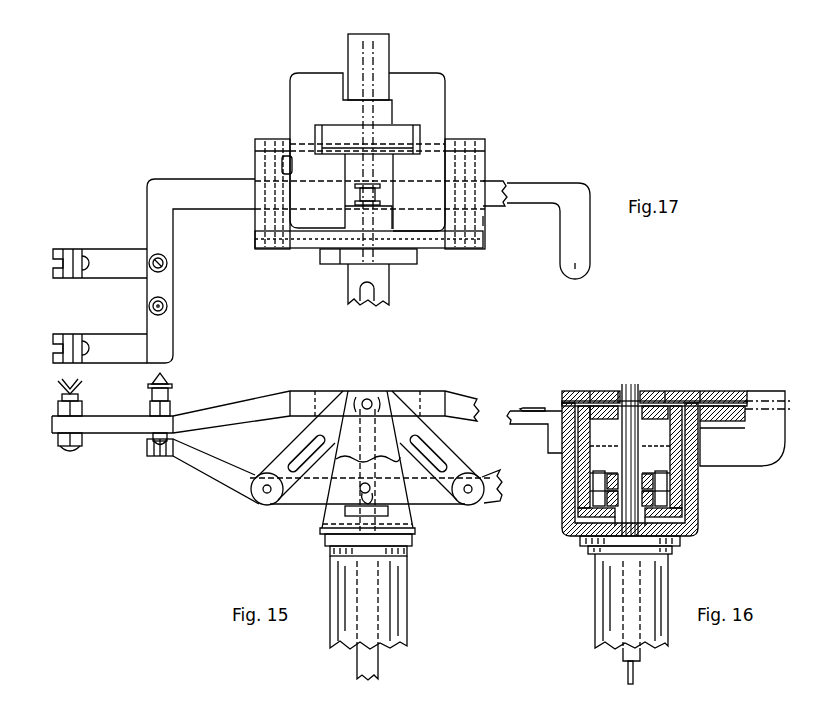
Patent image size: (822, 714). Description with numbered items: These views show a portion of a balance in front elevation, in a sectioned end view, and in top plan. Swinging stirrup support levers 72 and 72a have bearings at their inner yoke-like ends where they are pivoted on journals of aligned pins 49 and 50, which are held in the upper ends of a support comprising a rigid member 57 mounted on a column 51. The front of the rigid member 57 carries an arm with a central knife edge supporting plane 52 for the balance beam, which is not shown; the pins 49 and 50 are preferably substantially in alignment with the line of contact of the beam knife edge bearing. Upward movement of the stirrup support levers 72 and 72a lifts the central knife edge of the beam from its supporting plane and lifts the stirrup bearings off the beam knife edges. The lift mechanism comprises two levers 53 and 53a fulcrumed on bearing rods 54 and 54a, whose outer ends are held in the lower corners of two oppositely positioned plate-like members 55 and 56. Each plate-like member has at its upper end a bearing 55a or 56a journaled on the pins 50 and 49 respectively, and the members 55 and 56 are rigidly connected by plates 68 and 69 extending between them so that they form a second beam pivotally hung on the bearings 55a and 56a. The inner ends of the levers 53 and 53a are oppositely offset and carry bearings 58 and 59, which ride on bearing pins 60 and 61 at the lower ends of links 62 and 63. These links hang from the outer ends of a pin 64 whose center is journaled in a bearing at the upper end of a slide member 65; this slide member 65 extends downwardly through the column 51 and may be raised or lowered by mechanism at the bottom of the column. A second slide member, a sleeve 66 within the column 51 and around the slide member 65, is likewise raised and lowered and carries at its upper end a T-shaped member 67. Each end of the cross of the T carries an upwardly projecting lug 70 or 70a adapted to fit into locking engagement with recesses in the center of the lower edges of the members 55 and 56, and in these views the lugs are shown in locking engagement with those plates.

In FIG. 17, the pin 49 is at (372, 52).
In FIG. 16, the pin 49 is at (766, 399).
In FIG. 17, the pin 50 is at (363, 255).
In FIG. 15, the pin 50 is at (366, 397).
In FIG. 16, the pin 50 is at (565, 401).
In FIG. 15, the column 51 is at (407, 599).
In FIG. 16, the column 51 is at (631, 601).
In FIG. 17, the supporting plane 52 is at (361, 292).
In FIG. 16, the supporting plane 52 is at (548, 405).
In FIG. 17, the lever 53 is at (148, 258).
In FIG. 15, the lever 53 is at (208, 455).
In FIG. 17, the lever 53a is at (576, 182).
In FIG. 15, the lever 53a is at (490, 500).
In FIG. 15, the bearing rod 54 is at (243, 494).
In FIG. 15, the bearing rod 54a is at (478, 499).
In FIG. 17, the plate-like member 55 is at (446, 240).
In FIG. 15, the plate-like member 55 is at (455, 471).
In FIG. 16, the plate-like member 55 is at (582, 443).
In FIG. 16, the bearing 55a is at (586, 393).
In FIG. 17, the plate-like member 56 is at (456, 140).
In FIG. 16, the plate-like member 56 is at (686, 484).
In FIG. 16, the bearing 56a is at (690, 394).
In FIG. 17, the rigid member 57 is at (400, 122).
In FIG. 15, the rigid member 57 is at (400, 504).
In FIG. 16, the rigid member 57 is at (584, 536).
In FIG. 16, the bearing 58 is at (577, 521).
In FIG. 16, the bearing 59 is at (690, 531).
In FIG. 15, the bearing pin 60 is at (348, 493).
In FIG. 16, the bearing pin 60 is at (607, 470).
In FIG. 16, the bearing pin 61 is at (688, 462).
In FIG. 17, the link 62 is at (357, 203).
In FIG. 16, the link 62 is at (622, 402).
In FIG. 17, the link 63 is at (356, 186).
In FIG. 16, the link 63 is at (643, 437).
In FIG. 17, the pin 64 is at (424, 249).
In FIG. 16, the pin 64 is at (626, 402).
In FIG. 17, the slide member 65 is at (361, 194).
In FIG. 16, the slide member 65 is at (634, 402).
In FIG. 16, the sleeve 66 is at (641, 656).
In FIG. 15, the T-shaped member 67 is at (345, 509).
In FIG. 16, the T-shaped member 67 is at (671, 549).
In FIG. 17, the plate 68 is at (283, 166).
In FIG. 15, the plate 68 is at (303, 451).
In FIG. 16, the plate 68 is at (694, 421).
In FIG. 17, the plate 69 is at (484, 221).
In FIG. 15, the plate 69 is at (436, 453).
In FIG. 15, the lug 70 is at (398, 511).
In FIG. 16, the lug 70 is at (586, 501).
In FIG. 16, the lug 70a is at (681, 509).
In FIG. 17, the stirrup support lever 72 is at (326, 70).
In FIG. 15, the stirrup support lever 72 is at (229, 403).
In FIG. 16, the stirrup support lever 72 is at (712, 394).
In FIG. 17, the stirrup support lever 72a is at (440, 72).
In FIG. 15, the stirrup support lever 72a is at (447, 392).
In FIG. 16, the stirrup support lever 72a is at (733, 418).